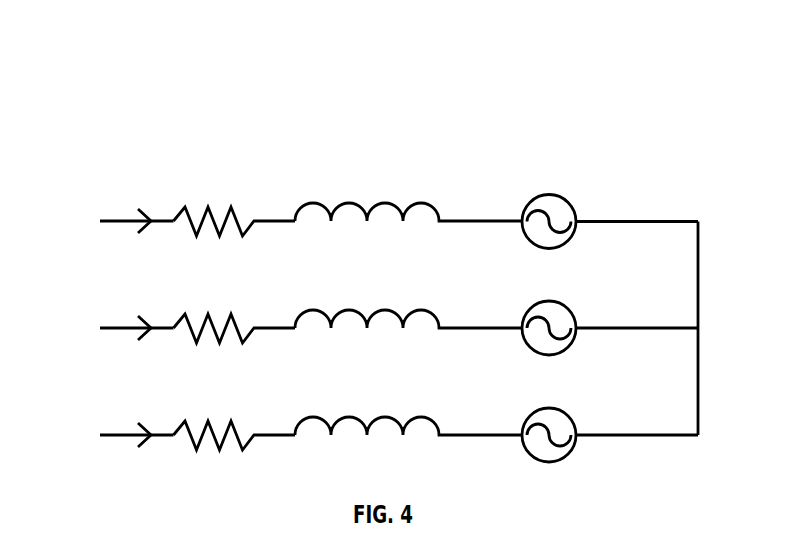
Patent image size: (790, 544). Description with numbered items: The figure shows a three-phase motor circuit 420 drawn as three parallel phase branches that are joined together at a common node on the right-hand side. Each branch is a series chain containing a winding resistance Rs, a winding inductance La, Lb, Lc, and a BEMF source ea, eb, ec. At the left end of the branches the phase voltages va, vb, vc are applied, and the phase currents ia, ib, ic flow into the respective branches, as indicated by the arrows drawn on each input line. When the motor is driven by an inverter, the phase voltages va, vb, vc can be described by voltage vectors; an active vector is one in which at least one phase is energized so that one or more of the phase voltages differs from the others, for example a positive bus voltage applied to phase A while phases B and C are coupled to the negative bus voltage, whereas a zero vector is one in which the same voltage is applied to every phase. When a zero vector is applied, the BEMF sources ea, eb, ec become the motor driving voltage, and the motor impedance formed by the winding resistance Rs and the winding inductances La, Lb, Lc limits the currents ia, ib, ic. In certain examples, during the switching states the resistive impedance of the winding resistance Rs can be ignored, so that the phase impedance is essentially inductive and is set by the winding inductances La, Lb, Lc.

The motor circuit 420 is at (363, 118).
The phase A voltage va is at (115, 217).
The phase B voltage vb is at (115, 324).
The phase C voltage vc is at (115, 431).
The phase A current ia is at (144, 202).
The phase B current ib is at (145, 309).
The phase C current ic is at (144, 416).
The winding resistance Rs is at (235, 299).
The phase A winding inductance La is at (408, 184).
The phase B winding inductance Lb is at (408, 291).
The phase C winding inductance Lc is at (408, 398).
The phase A BEMF source ea is at (549, 196).
The phase B BEMF source eb is at (549, 302).
The phase C BEMF source ec is at (549, 409).